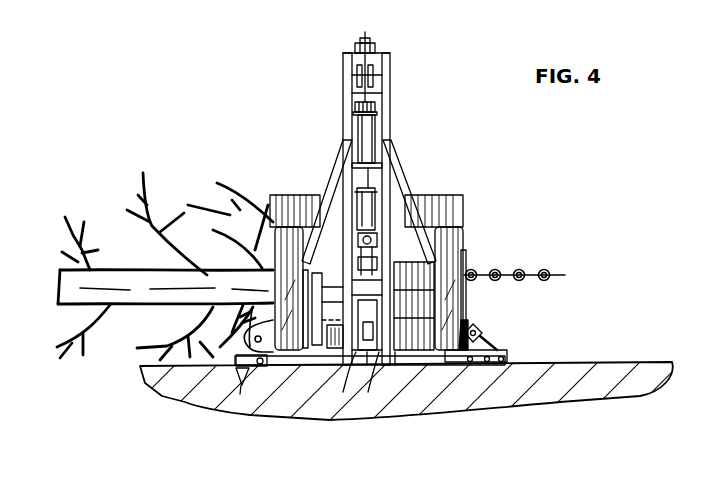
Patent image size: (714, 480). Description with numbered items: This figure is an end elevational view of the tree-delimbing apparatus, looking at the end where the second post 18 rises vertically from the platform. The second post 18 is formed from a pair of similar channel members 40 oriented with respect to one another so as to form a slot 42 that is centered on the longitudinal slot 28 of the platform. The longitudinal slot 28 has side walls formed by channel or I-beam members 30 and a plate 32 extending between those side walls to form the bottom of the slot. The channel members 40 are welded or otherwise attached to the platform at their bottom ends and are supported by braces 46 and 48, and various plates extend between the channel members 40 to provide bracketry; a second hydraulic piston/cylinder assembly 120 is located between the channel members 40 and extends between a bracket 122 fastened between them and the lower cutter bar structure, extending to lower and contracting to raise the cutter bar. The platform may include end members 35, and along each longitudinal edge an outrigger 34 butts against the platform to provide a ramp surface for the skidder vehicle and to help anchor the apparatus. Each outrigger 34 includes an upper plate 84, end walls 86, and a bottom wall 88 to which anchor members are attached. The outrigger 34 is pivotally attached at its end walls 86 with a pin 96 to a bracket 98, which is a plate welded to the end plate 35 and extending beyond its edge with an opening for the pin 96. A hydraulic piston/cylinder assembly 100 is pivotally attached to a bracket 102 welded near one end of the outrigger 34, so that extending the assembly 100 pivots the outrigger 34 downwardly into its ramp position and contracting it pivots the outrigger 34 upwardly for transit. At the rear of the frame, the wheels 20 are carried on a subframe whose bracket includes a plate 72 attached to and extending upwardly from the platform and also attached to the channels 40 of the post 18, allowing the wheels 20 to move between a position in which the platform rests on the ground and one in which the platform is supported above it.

The second post 18 is at (376, 189).
The wheels 20 is at (464, 240).
The longitudinal slot 28 is at (358, 366).
The channel or I-beam members 30 is at (375, 366).
The plate 32 is at (366, 368).
The outrigger 34 is at (507, 352).
The end members 35 is at (312, 359).
The channel members 40 is at (343, 107).
The slot 42 is at (372, 66).
The brace 46 is at (336, 170).
The brace 48 is at (322, 211).
The plate 72 is at (402, 366).
The upper plate 84 is at (521, 363).
The end walls 86 is at (502, 363).
The bottom wall 88 is at (487, 363).
The pin 96 is at (481, 334).
The bracket 98 is at (470, 363).
The hydraulic piston/cylinder assembly 100 is at (470, 322).
The bracket 102 is at (495, 344).
The second hydraulic piston/cylinder assembly 120 is at (376, 151).
The bracket 122 is at (363, 102).